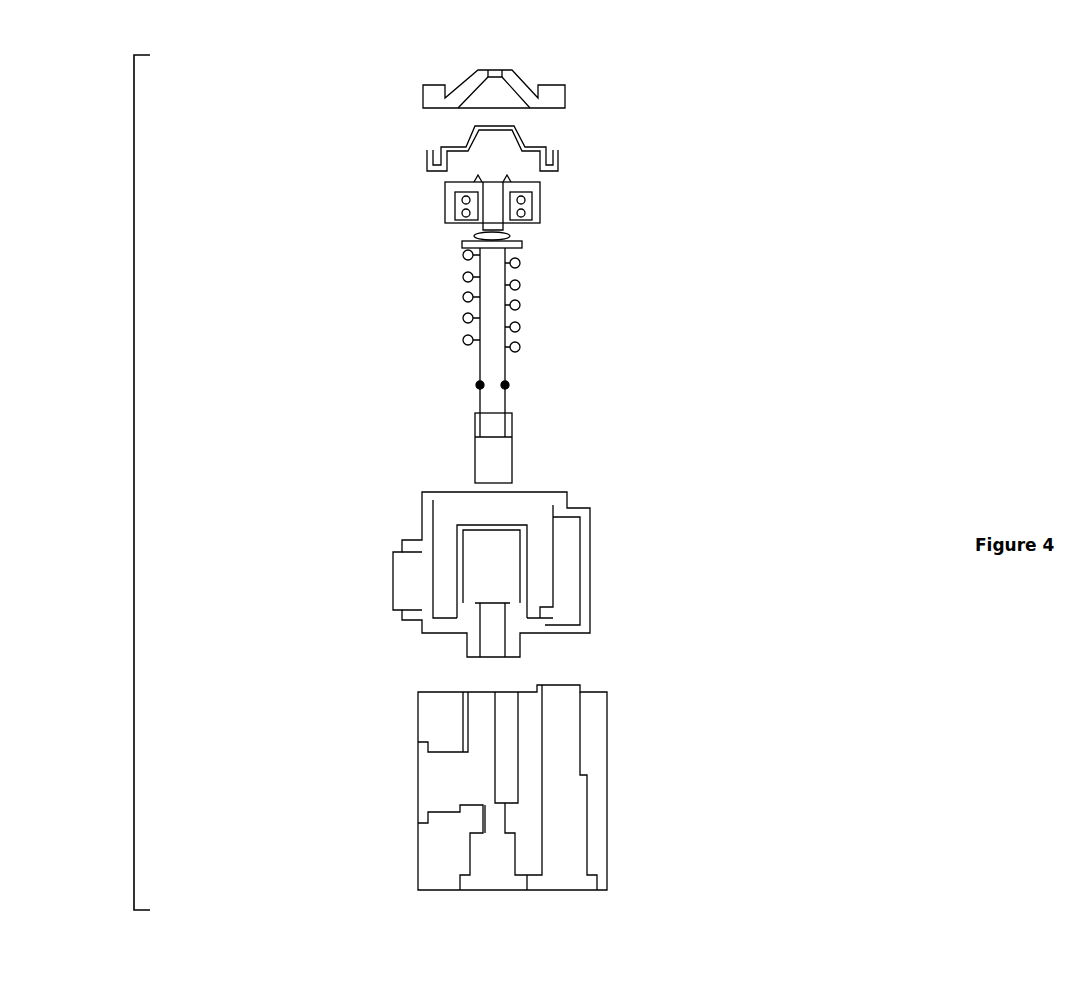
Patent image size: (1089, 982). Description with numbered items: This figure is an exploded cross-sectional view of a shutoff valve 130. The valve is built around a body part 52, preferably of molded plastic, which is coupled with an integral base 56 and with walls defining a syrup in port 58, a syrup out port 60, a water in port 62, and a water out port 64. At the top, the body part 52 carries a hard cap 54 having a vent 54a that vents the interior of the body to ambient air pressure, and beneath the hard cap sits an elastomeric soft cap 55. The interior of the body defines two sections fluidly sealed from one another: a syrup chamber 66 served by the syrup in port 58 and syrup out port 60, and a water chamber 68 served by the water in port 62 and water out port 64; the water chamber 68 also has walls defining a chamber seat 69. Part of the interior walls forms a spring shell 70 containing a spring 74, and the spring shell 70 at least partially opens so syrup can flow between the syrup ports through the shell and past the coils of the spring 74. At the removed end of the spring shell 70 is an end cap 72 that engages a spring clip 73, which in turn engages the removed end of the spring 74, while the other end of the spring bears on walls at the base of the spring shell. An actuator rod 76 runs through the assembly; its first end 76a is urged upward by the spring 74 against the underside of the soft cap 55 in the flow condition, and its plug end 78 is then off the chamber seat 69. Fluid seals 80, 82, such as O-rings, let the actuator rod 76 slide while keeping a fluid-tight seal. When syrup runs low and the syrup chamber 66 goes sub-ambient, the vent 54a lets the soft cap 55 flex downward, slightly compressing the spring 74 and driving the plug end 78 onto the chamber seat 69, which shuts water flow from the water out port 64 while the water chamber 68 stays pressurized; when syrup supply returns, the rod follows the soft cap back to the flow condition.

The shutoff valve 130 is at (134, 493).
The hard cap 54 is at (467, 87).
The vent 54a is at (493, 72).
The soft cap 55 is at (510, 133).
The end cap 72 is at (540, 185).
The fluid seal 80 is at (482, 180).
The first end 76a is at (490, 237).
The spring clip 73 is at (480, 245).
The actuator rod 76 is at (498, 275).
The spring 74 is at (520, 305).
The fluid seal 82 is at (512, 383).
The plug end 78 is at (487, 455).
The syrup chamber 66 is at (540, 562).
The spring shell 70 is at (527, 540).
The syrup in port 58 is at (386, 582).
The water in port 62 is at (411, 783).
The body part 52 is at (417, 720).
The integral base 56 is at (445, 888).
The water chamber 68 is at (495, 783).
The chamber seat 69 is at (495, 807).
The syrup out port 60 is at (563, 890).
The water out port 64 is at (494, 890).